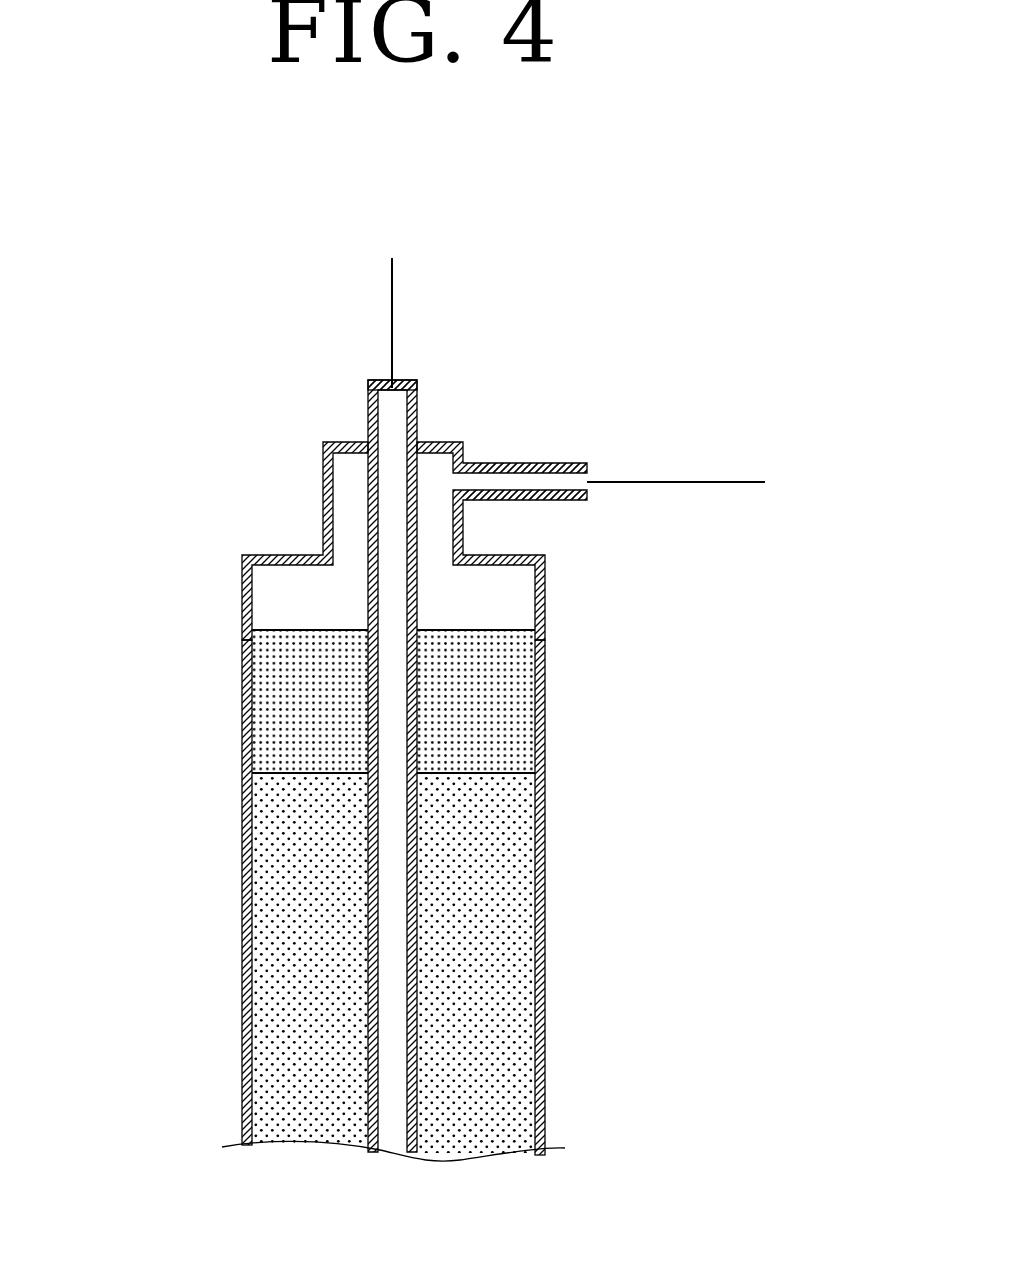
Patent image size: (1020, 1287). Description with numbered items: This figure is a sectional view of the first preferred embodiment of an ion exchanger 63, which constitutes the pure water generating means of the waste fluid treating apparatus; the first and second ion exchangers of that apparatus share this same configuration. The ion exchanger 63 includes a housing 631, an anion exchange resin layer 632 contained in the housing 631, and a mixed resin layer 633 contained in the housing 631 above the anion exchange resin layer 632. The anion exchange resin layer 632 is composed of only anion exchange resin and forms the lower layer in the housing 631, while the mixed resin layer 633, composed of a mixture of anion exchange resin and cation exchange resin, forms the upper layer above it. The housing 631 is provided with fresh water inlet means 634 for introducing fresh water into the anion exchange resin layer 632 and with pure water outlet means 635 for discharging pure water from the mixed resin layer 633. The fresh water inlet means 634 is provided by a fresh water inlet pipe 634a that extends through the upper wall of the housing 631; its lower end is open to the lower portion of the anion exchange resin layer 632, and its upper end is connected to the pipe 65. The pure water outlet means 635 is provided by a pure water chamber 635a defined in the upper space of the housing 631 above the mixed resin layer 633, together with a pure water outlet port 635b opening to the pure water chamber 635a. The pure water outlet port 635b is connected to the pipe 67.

The ion exchanger 63 is at (428, 706).
The housing 631 is at (236, 876).
The anion exchange resin layer 632 is at (507, 1020).
The mixed resin layer 633 is at (507, 703).
The fresh water inlet means 634 is at (388, 745).
The fresh water inlet pipe 634a is at (368, 402).
The pure water outlet means 635 is at (474, 512).
The pure water chamber 635a is at (507, 613).
The pure water outlet port 635b is at (530, 462).
The pipe 65 is at (393, 302).
The pipe 67 is at (738, 482).